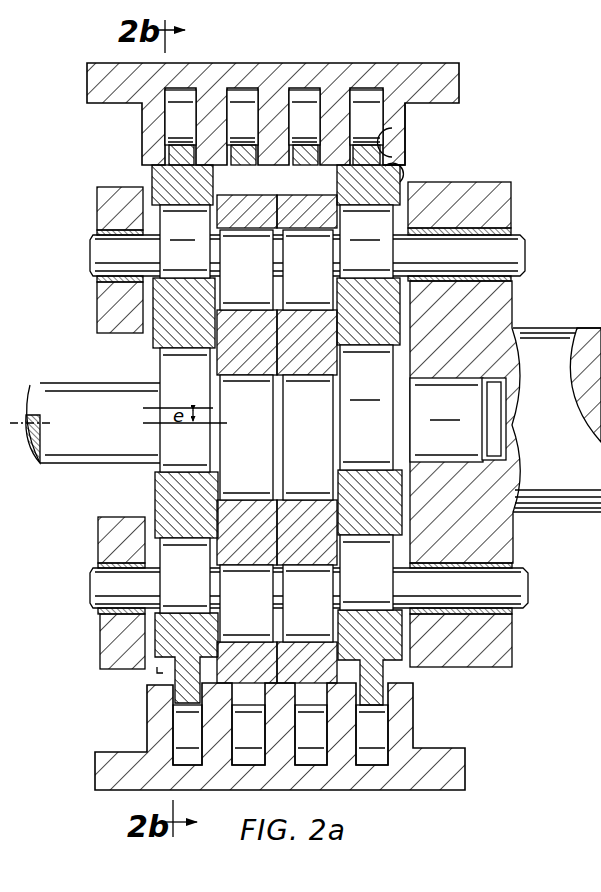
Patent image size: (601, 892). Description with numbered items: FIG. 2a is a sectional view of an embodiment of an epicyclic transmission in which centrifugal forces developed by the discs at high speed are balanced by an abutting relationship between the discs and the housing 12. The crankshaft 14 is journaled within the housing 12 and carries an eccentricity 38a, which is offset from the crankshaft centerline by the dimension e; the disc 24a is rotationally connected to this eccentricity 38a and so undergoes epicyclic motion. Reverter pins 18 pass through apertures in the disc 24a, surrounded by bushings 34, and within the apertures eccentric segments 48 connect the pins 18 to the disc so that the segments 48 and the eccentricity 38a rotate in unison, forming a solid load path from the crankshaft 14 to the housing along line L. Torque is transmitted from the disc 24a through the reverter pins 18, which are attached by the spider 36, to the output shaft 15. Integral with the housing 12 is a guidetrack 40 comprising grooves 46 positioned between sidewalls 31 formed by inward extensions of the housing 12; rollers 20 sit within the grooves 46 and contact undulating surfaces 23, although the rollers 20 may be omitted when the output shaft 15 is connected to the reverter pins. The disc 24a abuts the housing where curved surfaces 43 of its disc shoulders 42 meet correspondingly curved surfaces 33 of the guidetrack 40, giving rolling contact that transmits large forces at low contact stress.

The transmission housing 12 is at (108, 63).
The crankshaft 14 is at (62, 397).
The output shaft 15 is at (547, 352).
The reverter pins 18 is at (107, 248).
The rollers 20 is at (175, 113).
The undulating surfaces 23 is at (175, 157).
The disc 24a is at (173, 497).
The sidewalls 31 is at (147, 718).
The curved surfaces of guidetracks 33 is at (268, 168).
The bushings 34 is at (107, 292).
The spider 36 is at (488, 540).
The eccentricity 38a is at (172, 367).
The guidetrack 40 is at (410, 143).
The disc shoulders 42 is at (163, 183).
The curved surfaces of disc shoulders 43 is at (278, 160).
The grooves 46 is at (374, 95).
The eccentric segments 48 is at (173, 552).